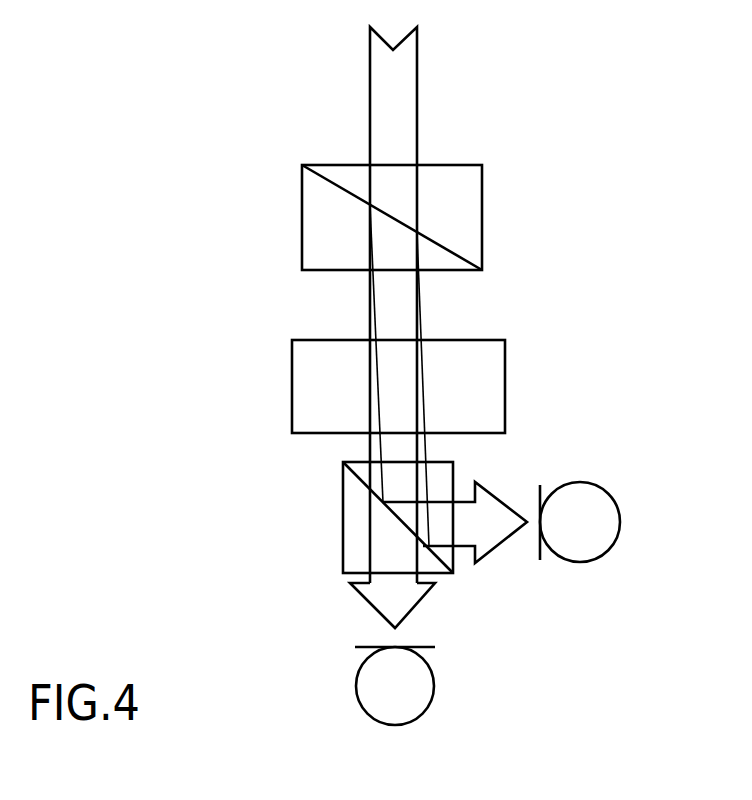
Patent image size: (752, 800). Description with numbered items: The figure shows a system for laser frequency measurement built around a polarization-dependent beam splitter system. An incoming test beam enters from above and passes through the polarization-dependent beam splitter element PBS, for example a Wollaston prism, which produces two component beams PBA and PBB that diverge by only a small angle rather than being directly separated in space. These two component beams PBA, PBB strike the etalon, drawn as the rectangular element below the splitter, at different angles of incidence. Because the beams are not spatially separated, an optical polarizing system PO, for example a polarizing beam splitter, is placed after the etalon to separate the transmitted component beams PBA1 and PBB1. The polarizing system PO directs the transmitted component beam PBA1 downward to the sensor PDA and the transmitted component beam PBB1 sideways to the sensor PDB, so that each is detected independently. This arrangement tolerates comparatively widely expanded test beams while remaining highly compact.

The polarization-dependent beam splitter element PBS is at (428, 217).
The component beam PBA is at (342, 374).
The component beam PBB is at (453, 374).
The optical polarizing system PO is at (369, 517).
The transmitted component beam PBA1 is at (360, 605).
The transmitted component beam PBB1 is at (455, 547).
The sensor PDB is at (580, 545).
The sensor PDA is at (433, 686).